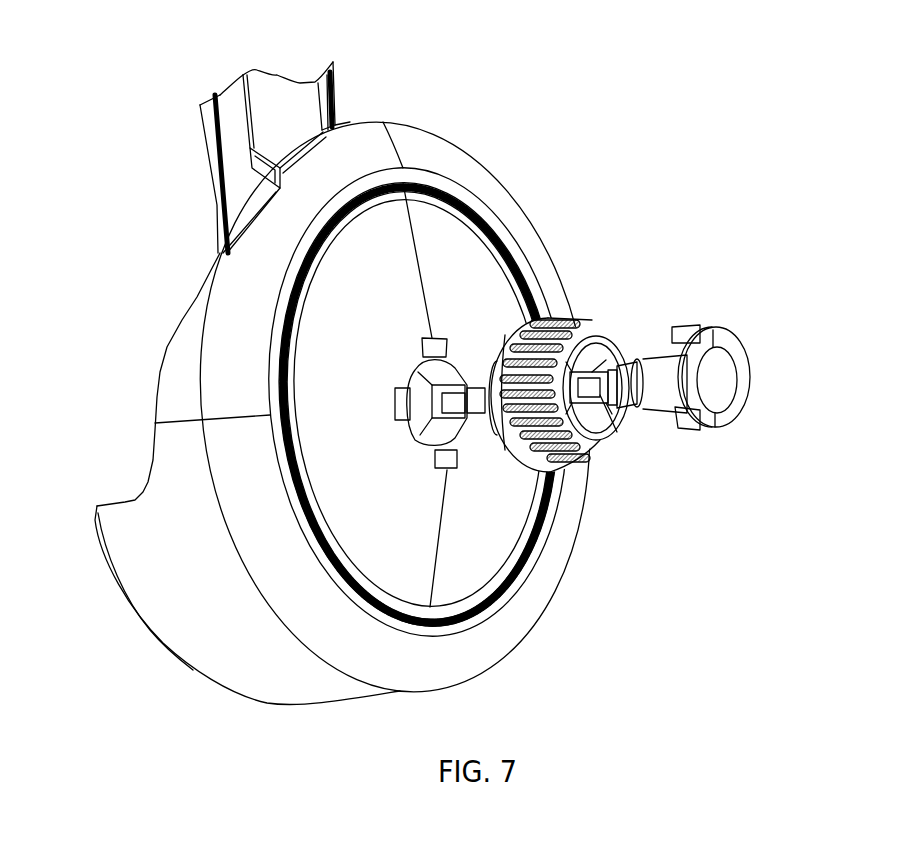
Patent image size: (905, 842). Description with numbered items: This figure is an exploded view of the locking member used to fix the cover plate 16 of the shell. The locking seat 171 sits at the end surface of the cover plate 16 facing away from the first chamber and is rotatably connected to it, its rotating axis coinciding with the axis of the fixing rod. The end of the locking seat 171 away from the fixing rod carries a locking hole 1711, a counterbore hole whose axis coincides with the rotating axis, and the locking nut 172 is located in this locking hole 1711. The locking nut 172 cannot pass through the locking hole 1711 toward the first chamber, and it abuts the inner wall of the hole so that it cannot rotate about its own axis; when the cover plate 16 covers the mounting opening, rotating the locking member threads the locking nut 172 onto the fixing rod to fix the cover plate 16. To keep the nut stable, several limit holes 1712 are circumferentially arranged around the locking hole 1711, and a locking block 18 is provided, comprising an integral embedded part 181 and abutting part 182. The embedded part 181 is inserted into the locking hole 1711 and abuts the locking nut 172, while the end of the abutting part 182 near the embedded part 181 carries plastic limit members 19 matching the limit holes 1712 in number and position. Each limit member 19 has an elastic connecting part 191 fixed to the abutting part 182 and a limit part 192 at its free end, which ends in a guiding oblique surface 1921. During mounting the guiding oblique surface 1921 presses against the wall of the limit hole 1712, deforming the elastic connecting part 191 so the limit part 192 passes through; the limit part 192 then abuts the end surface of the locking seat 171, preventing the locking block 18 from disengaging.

The cover plate 16 is at (442, 157).
The locking seat 171 is at (607, 443).
The locking hole 1711 is at (613, 437).
The limit holes 1712 is at (586, 360).
The locking nut 172 is at (639, 367).
The locking block 18 is at (747, 375).
The embedded part 181 is at (663, 393).
The abutting part 182 is at (710, 363).
The limit members 19 is at (749, 381).
The elastic connecting part 191 is at (700, 427).
The limit part 192 is at (690, 430).
The guiding oblique surface 1921 is at (673, 343).